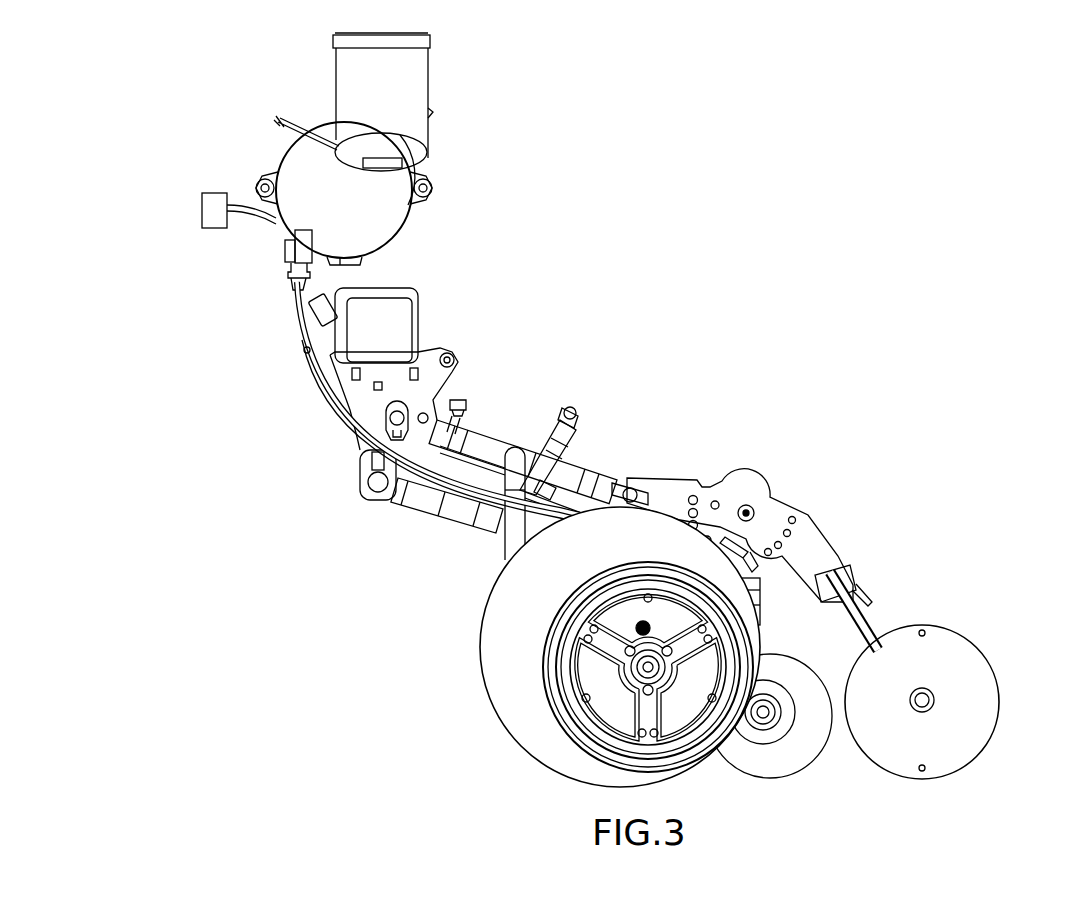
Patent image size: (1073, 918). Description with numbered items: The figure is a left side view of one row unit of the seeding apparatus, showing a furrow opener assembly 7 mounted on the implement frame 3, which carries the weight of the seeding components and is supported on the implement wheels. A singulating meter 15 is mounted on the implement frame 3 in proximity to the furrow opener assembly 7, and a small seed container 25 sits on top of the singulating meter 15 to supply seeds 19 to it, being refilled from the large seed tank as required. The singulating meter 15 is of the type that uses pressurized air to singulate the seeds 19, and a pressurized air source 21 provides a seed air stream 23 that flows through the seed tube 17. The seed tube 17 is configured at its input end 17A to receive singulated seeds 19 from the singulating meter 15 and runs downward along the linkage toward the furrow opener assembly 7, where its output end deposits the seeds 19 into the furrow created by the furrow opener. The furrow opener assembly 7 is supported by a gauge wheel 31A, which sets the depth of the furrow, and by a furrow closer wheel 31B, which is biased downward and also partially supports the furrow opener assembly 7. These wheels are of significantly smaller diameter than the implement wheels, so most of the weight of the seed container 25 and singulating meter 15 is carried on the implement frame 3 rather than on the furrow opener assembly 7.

The implement frame 3 is at (418, 315).
The furrow opener assembly 7 is at (660, 480).
The singulating meter 15 is at (407, 228).
The seed tube 17 is at (322, 393).
The input end 17A is at (297, 295).
The seeds 19 is at (305, 349).
The pressurized air source 21 is at (202, 200).
The seed air stream 23 is at (330, 410).
The seed container 25 is at (432, 73).
The gauge wheel 31A is at (556, 730).
The furrow closer wheel 31B is at (965, 635).